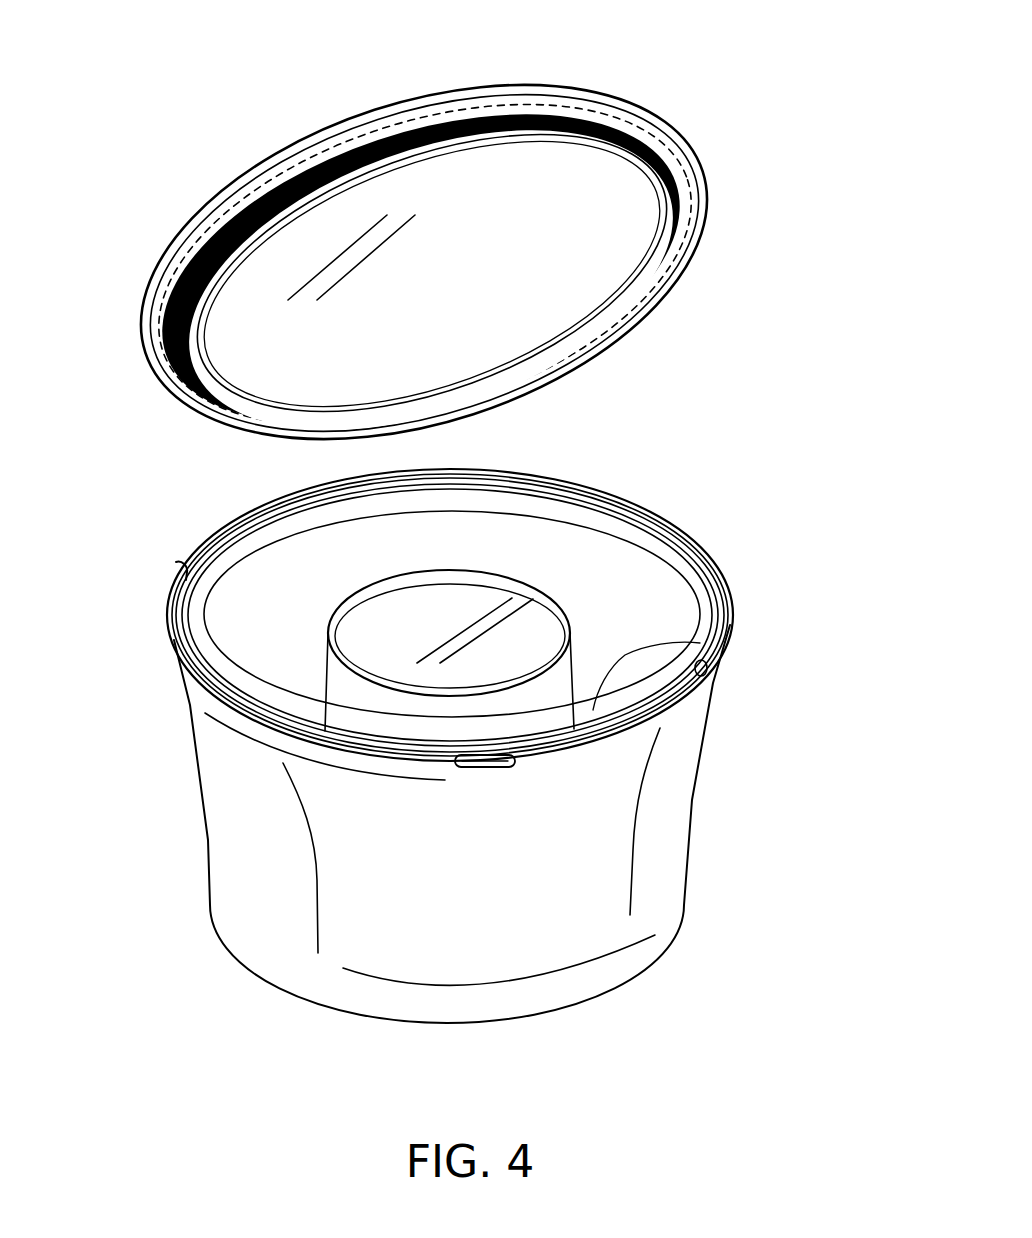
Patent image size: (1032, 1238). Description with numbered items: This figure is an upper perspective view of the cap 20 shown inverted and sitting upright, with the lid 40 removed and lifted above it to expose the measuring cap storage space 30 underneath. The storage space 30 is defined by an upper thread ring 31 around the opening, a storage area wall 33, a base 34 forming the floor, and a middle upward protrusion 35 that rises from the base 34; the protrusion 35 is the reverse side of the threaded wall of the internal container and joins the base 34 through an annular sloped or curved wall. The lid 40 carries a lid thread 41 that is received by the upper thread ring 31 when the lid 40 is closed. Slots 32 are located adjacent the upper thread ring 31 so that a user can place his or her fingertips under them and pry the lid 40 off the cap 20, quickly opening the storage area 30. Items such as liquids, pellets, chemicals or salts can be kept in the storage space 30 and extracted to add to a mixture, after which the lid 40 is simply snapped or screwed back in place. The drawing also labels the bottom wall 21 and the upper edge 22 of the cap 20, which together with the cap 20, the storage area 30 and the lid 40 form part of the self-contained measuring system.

The cap 20 is at (471, 694).
The container bottom wall 21 is at (426, 824).
The container upper edge 22 is at (390, 615).
The measuring cap storage space 30 is at (473, 632).
The upper thread ring 31 is at (593, 523).
The slots 32 is at (667, 508).
The storage area wall 33 is at (308, 570).
The base 34 is at (700, 643).
The upward protrusion 35 is at (425, 627).
The lid 40 is at (430, 261).
The lid thread 41 is at (210, 242).